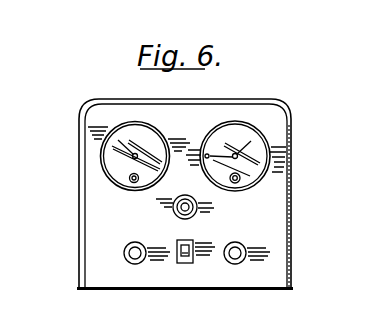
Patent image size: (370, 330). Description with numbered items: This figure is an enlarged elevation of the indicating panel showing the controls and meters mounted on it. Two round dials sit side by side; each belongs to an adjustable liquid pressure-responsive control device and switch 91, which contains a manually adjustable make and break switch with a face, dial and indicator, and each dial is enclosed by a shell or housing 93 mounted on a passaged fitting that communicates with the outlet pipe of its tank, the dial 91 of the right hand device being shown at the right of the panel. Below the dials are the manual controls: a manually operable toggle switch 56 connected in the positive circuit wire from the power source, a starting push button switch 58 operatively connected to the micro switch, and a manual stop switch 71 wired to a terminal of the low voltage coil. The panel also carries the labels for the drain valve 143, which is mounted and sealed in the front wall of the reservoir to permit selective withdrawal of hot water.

The manually operable toggle switch 56 is at (173, 268).
The starting push button switch 58 is at (124, 256).
The manual stop switch 71 is at (247, 247).
The adjustable liquid pressure-responsive control device and switch 91 is at (91, 152).
The enclosing shell or housing 93 is at (116, 127).
The drain valve 143 is at (96, 139).